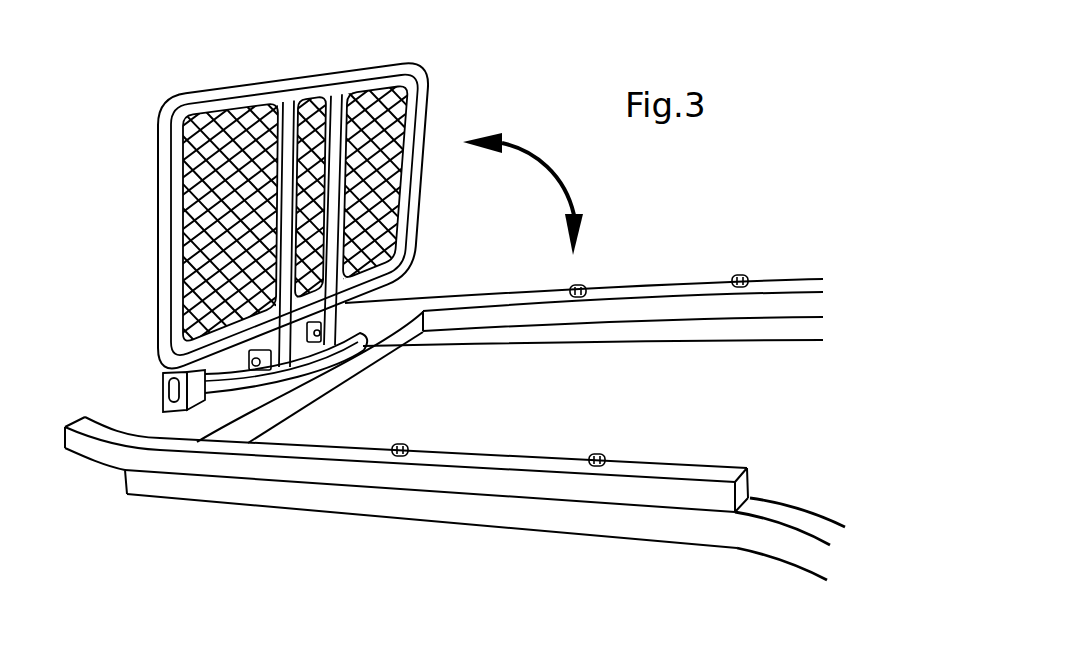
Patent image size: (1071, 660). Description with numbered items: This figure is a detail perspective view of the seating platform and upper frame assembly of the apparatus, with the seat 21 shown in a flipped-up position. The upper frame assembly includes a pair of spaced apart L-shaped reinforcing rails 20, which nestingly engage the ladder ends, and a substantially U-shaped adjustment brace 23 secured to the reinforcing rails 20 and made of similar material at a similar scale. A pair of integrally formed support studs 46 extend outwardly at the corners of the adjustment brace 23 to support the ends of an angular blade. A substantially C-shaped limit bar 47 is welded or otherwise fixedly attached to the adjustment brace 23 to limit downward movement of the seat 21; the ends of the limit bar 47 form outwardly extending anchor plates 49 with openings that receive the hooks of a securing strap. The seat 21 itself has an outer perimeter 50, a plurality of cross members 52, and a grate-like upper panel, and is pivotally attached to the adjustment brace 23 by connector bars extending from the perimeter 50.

The reinforcing rail 20 is at (423, 507).
The seat 21 is at (131, 257).
The adjustment brace 23 is at (555, 465).
The support stud 46 is at (78, 443).
The limit bar 47 is at (358, 345).
The anchor plate 49 is at (163, 393).
The outer perimeter 50 is at (162, 197).
The cross member 52 is at (288, 110).